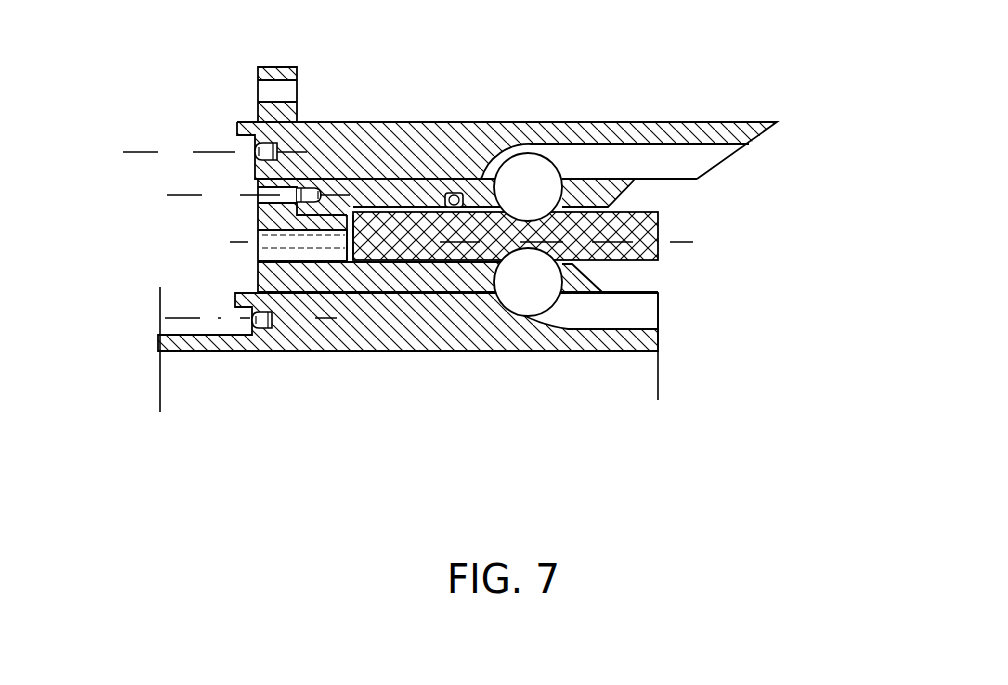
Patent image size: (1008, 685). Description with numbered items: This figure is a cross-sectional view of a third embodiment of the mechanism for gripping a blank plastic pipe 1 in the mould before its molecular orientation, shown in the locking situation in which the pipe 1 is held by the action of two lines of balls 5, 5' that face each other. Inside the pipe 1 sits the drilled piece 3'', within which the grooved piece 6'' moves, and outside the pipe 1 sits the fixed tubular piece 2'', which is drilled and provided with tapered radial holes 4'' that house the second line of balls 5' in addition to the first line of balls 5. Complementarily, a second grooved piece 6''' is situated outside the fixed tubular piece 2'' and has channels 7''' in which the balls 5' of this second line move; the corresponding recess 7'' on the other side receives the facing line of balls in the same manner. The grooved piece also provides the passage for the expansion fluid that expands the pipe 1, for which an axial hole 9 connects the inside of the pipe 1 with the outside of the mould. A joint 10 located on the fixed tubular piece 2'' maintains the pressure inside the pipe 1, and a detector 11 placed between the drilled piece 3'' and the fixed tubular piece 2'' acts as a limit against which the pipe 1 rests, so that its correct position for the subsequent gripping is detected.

The blank pipe 1 is at (593, 240).
The fixed tubular piece 2'' is at (691, 195).
The drilled piece 3'' is at (684, 289).
The tapered radial holes 4'' is at (507, 109).
The balls 5 is at (543, 359).
The balls 5' is at (465, 309).
The grooved piece 6'' is at (162, 363).
The second grooved piece 6''' is at (185, 94).
The upper recess 7'' is at (674, 108).
The channels 7''' is at (668, 377).
The axial hole 9 is at (288, 373).
The joint 10 is at (457, 191).
The detector 11 is at (345, 240).